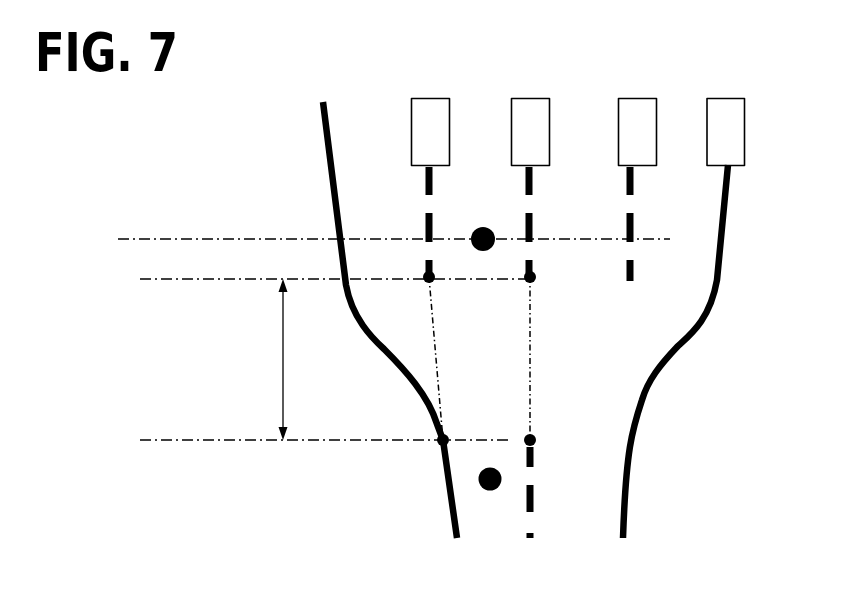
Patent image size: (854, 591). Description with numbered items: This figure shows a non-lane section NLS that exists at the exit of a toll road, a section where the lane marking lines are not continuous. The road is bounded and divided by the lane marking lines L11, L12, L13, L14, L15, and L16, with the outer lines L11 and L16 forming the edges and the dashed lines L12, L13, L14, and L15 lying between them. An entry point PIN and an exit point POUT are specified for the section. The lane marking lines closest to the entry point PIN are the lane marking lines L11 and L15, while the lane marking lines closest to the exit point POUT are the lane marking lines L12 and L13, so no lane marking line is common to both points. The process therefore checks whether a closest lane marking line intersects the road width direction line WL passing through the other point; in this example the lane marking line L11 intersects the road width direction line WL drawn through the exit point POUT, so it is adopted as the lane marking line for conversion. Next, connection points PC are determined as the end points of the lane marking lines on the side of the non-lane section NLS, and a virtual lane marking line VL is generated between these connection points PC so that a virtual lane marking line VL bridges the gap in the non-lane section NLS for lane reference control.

The road width direction line WL is at (128, 238).
The non-lane section NLS is at (335, 359).
The lane marking line L11 is at (330, 218).
The lane marking line L12 is at (425, 217).
The lane marking line L13 is at (534, 217).
The lane marking line L14 is at (635, 217).
The lane marking line L15 is at (543, 500).
The lane marking line L16 is at (725, 256).
The exit point POUT is at (483, 228).
The entry point PIN is at (479, 479).
The virtual lane marking line VL is at (437, 371).
The connection point PC is at (432, 281).